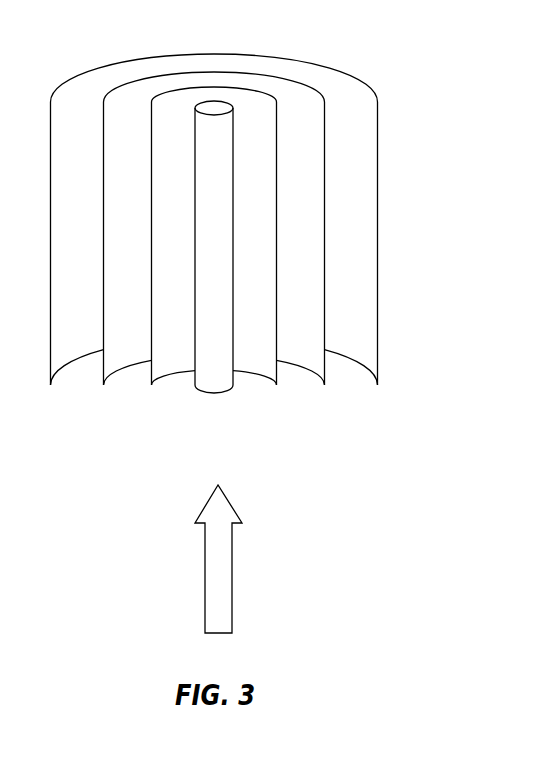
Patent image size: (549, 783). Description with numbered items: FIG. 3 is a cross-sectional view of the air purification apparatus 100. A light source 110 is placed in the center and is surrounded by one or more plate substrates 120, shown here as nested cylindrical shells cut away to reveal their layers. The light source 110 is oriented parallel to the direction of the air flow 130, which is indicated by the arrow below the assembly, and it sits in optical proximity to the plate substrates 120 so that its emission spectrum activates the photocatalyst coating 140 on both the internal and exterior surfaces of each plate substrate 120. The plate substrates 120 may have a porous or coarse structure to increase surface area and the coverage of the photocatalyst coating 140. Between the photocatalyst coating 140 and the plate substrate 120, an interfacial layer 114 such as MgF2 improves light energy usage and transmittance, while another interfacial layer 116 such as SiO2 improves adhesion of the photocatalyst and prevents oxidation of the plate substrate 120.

The air purification apparatus 100 is at (370, 44).
The light source 110 is at (233, 285).
The interfacial layer 114 is at (143, 108).
The interfacial layer 116 is at (253, 82).
The plate substrate 120 is at (324, 295).
The air flow 130 is at (232, 578).
The photocatalyst coating 140 is at (378, 177).